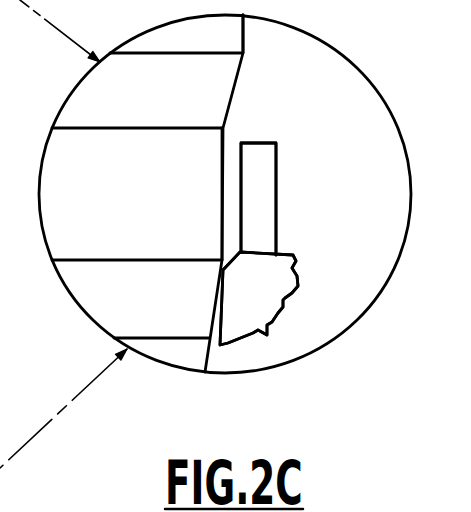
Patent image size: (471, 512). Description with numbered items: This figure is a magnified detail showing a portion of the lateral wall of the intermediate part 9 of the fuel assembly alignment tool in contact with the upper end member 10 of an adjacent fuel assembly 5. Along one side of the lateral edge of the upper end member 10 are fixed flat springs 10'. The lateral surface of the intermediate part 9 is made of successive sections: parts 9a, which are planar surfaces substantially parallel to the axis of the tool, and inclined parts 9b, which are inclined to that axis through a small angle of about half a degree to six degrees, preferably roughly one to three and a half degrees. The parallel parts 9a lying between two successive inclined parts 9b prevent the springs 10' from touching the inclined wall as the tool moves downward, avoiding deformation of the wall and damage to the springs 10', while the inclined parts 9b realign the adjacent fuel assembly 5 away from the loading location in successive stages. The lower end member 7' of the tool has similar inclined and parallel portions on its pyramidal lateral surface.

The intermediate part 9 is at (193, 105).
The lower end member 7' is at (275, 48).
The inclined parts 9b is at (224, 395).
The parallel parts 9a is at (224, 176).
The fuel assembly 5 is at (291, 232).
The flat springs 10' is at (286, 199).
The upper end member 10 is at (282, 298).